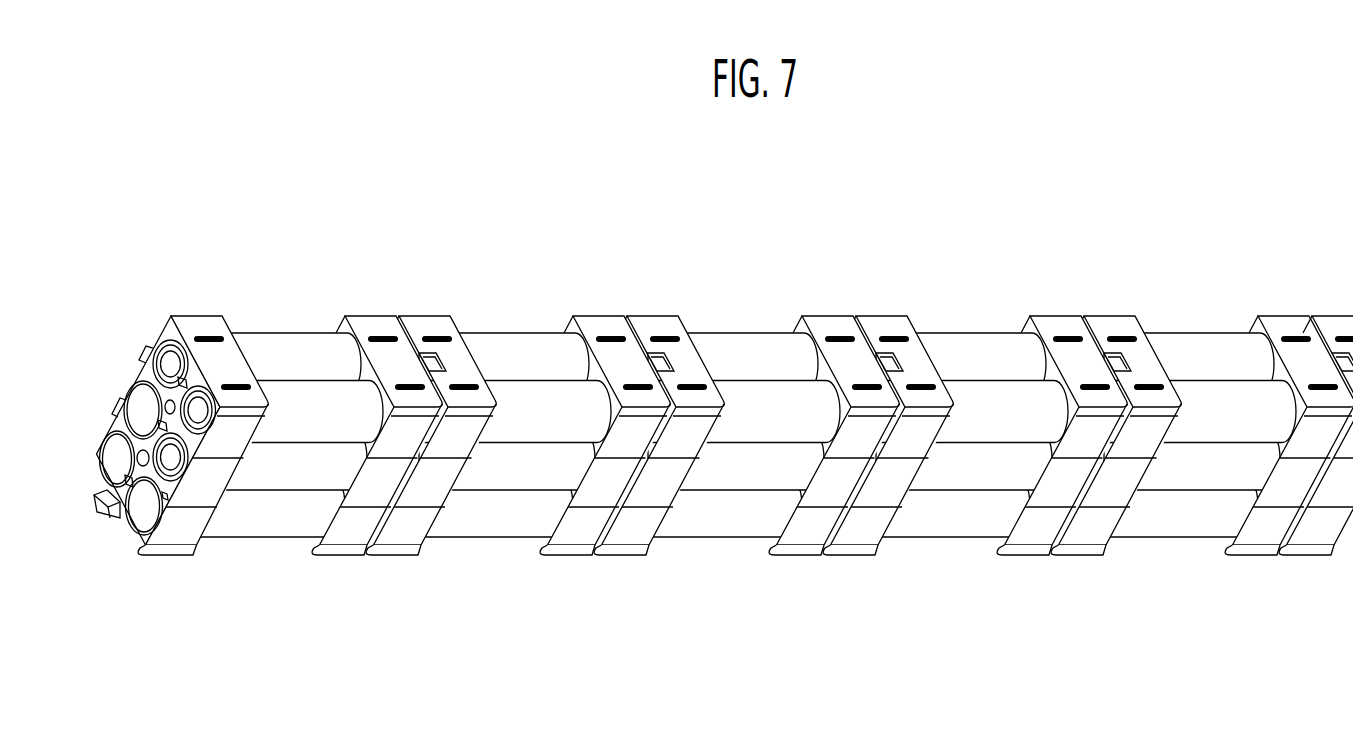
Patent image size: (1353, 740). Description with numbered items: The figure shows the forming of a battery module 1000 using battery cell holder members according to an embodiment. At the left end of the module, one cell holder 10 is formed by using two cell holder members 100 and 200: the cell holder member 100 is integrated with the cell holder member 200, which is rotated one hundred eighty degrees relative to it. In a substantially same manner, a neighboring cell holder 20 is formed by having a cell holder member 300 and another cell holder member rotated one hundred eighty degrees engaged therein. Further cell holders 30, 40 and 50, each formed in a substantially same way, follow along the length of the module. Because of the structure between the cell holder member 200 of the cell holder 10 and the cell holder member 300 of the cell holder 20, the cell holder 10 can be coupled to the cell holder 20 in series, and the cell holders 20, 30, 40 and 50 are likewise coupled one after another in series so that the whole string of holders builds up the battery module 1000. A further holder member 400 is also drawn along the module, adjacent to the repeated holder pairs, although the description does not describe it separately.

The battery module 1000 is at (148, 184).
The cell holder 10 is at (269, 449).
The cell holder 20 is at (519, 449).
The cell holder 30 is at (621, 304).
The cell holder 40 is at (849, 304).
The cell holder 50 is at (1077, 304).
The cell holder member 100 is at (163, 533).
The cell holder member 200 is at (347, 533).
The cell holder member 300 is at (403, 533).
The third holder 400 is at (577, 533).